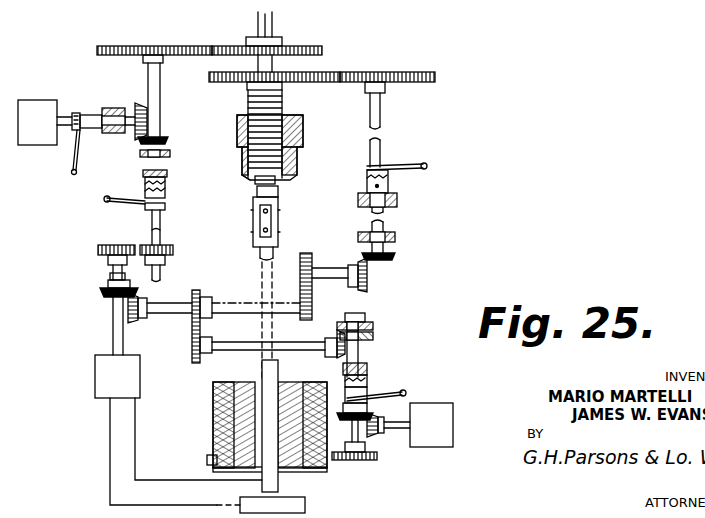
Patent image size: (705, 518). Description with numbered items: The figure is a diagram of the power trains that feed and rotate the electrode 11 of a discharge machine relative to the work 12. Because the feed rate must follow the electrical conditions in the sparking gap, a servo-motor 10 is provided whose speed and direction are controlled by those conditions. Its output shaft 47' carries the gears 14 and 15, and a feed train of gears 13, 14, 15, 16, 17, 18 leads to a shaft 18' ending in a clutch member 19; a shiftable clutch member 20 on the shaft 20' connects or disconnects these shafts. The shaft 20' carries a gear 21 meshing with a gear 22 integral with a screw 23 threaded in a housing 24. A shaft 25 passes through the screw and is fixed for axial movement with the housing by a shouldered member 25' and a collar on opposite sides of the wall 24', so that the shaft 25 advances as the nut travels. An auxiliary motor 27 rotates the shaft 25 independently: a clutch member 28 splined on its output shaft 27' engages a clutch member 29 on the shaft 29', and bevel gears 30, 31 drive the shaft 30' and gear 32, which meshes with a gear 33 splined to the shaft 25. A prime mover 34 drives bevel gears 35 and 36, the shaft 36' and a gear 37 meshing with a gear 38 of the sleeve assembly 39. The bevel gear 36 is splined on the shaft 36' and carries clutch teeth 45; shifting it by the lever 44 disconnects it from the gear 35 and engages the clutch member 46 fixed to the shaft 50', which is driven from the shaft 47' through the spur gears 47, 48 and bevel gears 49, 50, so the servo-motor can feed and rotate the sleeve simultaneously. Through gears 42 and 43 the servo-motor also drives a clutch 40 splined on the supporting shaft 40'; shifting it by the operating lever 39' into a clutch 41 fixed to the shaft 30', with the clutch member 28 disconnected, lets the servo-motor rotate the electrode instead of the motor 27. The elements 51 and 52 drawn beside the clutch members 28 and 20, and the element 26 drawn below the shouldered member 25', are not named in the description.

The servo-motor 10 is at (95, 390).
The electrode 11 is at (262, 484).
The work 12 is at (306, 503).
The gear 13 is at (100, 291).
The gear 14 is at (135, 316).
The gear 15 is at (313, 306).
The gear 16 is at (312, 258).
The gear 17 is at (368, 283).
The gear 18 is at (394, 240).
The shaft 18' is at (408, 204).
The clutch member 19 is at (389, 185).
The shiftable clutch member 20 is at (352, 161).
The shaft 20' is at (397, 105).
The gear 21 is at (405, 72).
The gear 22 is at (300, 73).
The screw 23 is at (284, 108).
The housing 24 is at (297, 145).
The wall 24' is at (225, 201).
The shaft 25 is at (282, 47).
The shouldered member 25' is at (294, 191).
The universal joint 26 is at (280, 224).
The auxiliary motor 27 is at (38, 102).
The output shaft 27' is at (70, 82).
The clutch member 28 is at (77, 113).
The clutch member 29 is at (105, 101).
The shaft 29' is at (112, 133).
The bevel gear 30 is at (165, 114).
The shaft 30' is at (171, 96).
The bevel gear 31 is at (168, 140).
The gear 32 is at (128, 46).
The gear 33 is at (232, 46).
The prime mover 34 is at (431, 448).
The bevel gear 35 is at (396, 420).
The bevel gear 36 is at (347, 422).
The shaft 36' is at (392, 436).
The gear 37 is at (375, 460).
The gear 38 is at (208, 460).
The sleeve assembly 39 is at (268, 367).
The operating lever 39' is at (124, 180).
The clutch 40 is at (177, 197).
The supporting shaft 40' is at (131, 227).
The clutch 41 is at (166, 180).
The gear 42 is at (100, 250).
The gear 43 is at (174, 250).
The lever 44 is at (405, 393).
The clutch teeth 45 is at (368, 380).
The clutch member 46 is at (372, 338).
The spur gear 47 is at (210, 310).
The output shaft 47' is at (169, 289).
The spur gear 48 is at (195, 357).
The bevel gear 49 is at (332, 355).
The bevel gear 50 is at (381, 342).
The shaft 50' is at (394, 327).
The lever 51 is at (72, 145).
The lever 52 is at (409, 164).